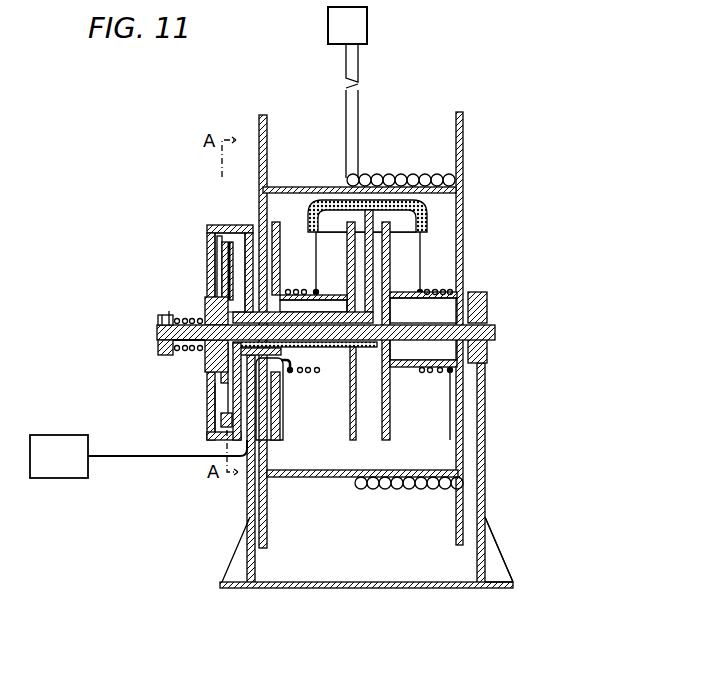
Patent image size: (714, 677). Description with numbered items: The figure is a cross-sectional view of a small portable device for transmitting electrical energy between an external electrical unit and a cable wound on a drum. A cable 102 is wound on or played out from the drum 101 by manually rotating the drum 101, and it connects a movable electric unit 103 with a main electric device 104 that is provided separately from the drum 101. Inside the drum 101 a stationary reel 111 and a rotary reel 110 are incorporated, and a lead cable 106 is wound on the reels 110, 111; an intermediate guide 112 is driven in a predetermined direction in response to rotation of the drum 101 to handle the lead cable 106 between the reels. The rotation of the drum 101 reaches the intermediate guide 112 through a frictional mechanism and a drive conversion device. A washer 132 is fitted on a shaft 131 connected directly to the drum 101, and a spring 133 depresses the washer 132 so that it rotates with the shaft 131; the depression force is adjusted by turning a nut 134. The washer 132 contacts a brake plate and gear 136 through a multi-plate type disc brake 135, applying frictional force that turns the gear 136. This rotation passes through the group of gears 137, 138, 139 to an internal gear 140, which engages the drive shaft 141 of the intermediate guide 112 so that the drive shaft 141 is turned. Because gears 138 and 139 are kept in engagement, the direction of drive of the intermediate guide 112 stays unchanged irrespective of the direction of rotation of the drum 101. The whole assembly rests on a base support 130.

The drum 101 is at (310, 493).
The cable 102 is at (358, 118).
The movable electric unit 103 is at (367, 22).
The main electric device 104 is at (138, 476).
The lead cable 106 is at (437, 268).
The rotary reel 110 is at (403, 375).
The stationary reel 111 is at (333, 377).
The intermediate guide 112 is at (330, 203).
The base support 130 is at (495, 580).
The shaft 131 is at (158, 336).
The washer 132 is at (203, 357).
The spring 133 is at (160, 320).
The nut 134 is at (158, 353).
The multi-plate type disc brake 135 is at (207, 373).
The brake plate and gear 136 is at (205, 310).
The gear 137 is at (222, 272).
The gear 138 is at (222, 253).
The gear 139 is at (217, 242).
The internal gear 140 is at (222, 227).
The drive shaft 141 is at (242, 221).